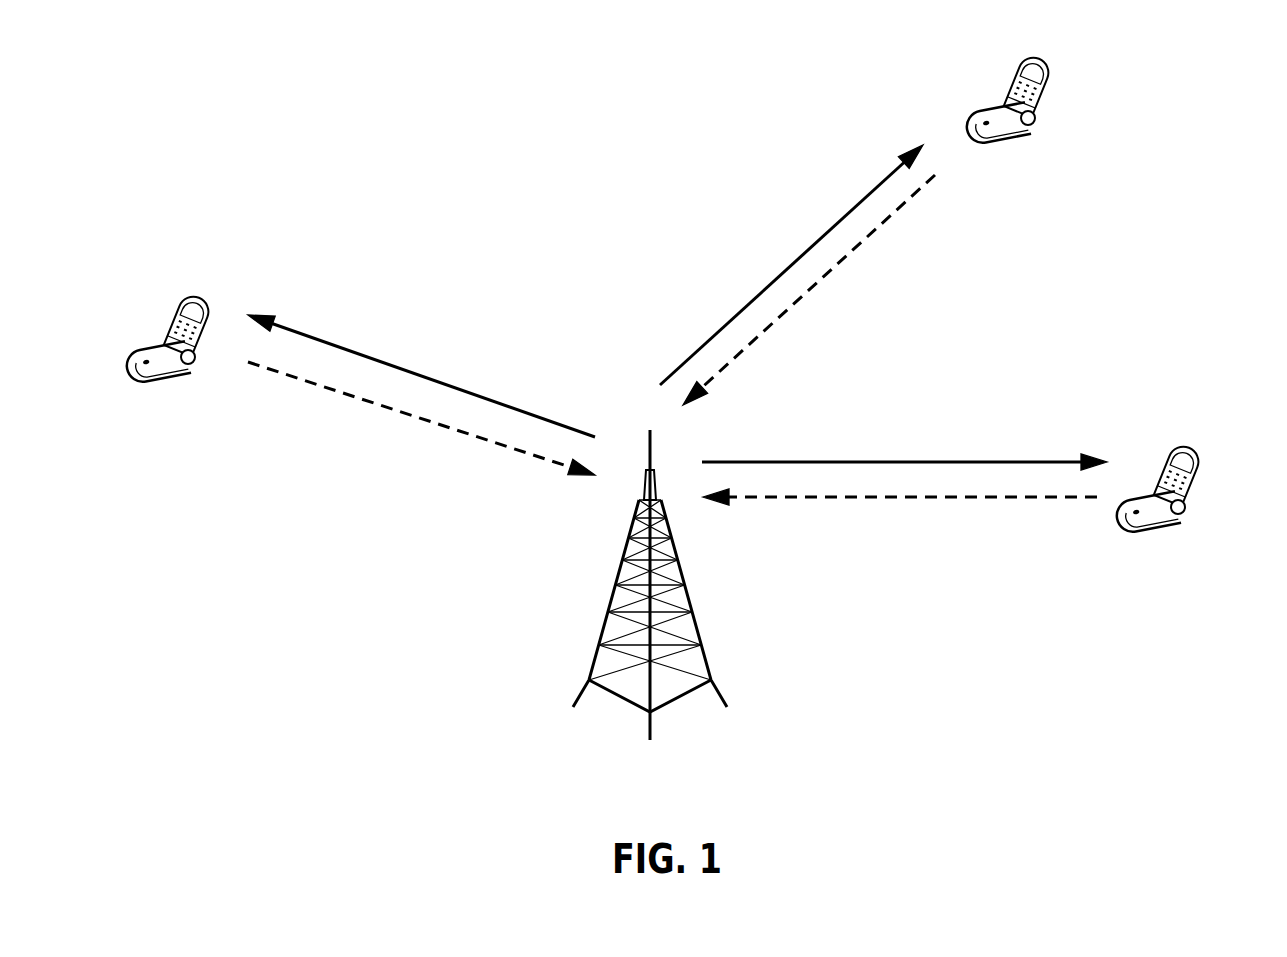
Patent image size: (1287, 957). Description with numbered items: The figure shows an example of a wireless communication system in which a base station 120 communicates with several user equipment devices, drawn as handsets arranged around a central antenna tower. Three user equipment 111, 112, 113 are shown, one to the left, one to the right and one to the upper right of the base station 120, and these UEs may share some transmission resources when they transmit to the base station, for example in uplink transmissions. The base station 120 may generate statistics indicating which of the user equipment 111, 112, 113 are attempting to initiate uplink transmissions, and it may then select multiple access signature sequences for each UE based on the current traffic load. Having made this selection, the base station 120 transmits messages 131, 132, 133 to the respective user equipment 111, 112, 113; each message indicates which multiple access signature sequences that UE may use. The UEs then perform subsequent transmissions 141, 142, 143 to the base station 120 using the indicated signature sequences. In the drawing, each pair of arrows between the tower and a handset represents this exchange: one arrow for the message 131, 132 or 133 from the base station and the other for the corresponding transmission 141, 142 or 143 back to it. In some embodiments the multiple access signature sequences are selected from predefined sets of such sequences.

The user equipment 111 is at (183, 378).
The user equipment 112 is at (1173, 525).
The user equipment 113 is at (1024, 135).
The base station 120 is at (707, 660).
The message 131 is at (460, 432).
The message 132 is at (863, 498).
The message 133 is at (833, 265).
The subsequent transmission 141 is at (357, 353).
The subsequent transmission 142 is at (1015, 460).
The subsequent transmission 143 is at (840, 218).